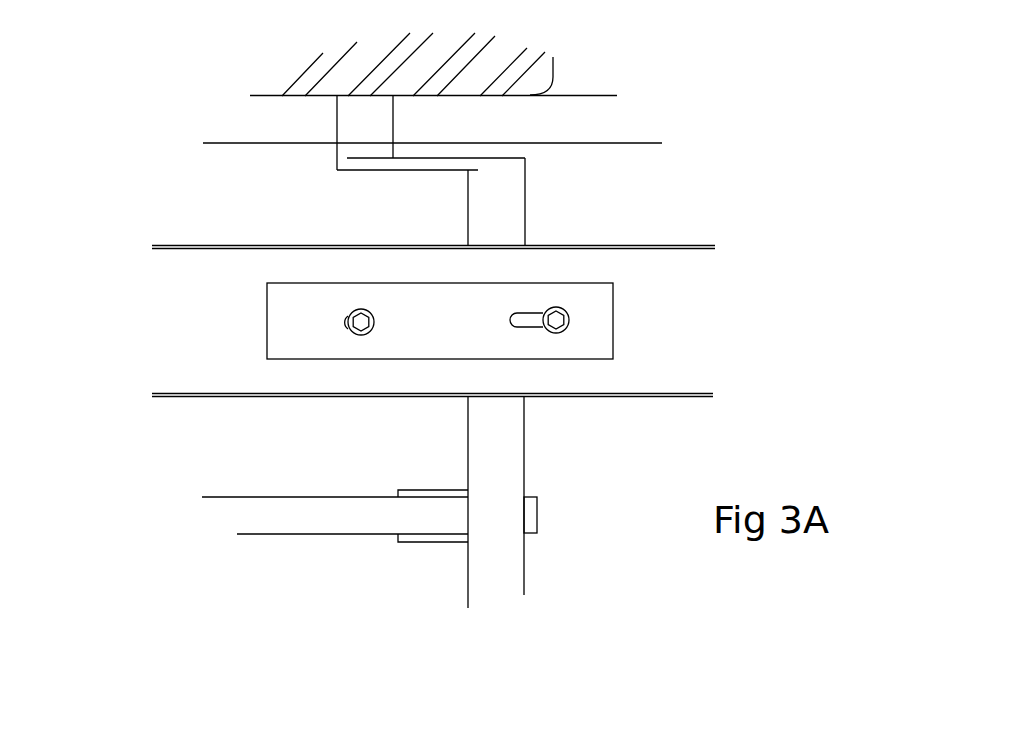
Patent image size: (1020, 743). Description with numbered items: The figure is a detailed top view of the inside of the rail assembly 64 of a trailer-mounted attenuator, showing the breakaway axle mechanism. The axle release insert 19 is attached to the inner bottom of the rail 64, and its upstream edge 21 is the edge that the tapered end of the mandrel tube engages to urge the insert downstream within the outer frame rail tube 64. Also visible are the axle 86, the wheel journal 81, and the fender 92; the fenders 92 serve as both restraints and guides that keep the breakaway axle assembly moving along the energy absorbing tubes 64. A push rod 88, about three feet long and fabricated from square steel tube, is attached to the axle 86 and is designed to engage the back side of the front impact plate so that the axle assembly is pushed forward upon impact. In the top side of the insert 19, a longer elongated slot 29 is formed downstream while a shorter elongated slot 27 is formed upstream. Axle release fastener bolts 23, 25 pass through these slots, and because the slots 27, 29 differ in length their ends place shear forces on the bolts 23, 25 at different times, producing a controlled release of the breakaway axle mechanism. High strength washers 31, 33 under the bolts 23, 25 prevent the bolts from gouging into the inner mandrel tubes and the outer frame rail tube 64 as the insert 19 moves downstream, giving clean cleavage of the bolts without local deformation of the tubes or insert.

The fender 92 is at (497, 60).
The wheel journal 81 is at (348, 123).
The axle 86 is at (498, 203).
The rail assembly 64 is at (565, 242).
The axle release insert 19 is at (429, 293).
The upstream edge 21 is at (265, 343).
The upper elongated slot 27 is at (333, 318).
The axle release fastener bolt 23 is at (363, 315).
The high strength washer 31 is at (375, 333).
The axle release fastener bolt 25 is at (560, 322).
The high strength washer 33 is at (565, 337).
The upper elongated slot 29 is at (527, 325).
The push rod 88 is at (280, 517).